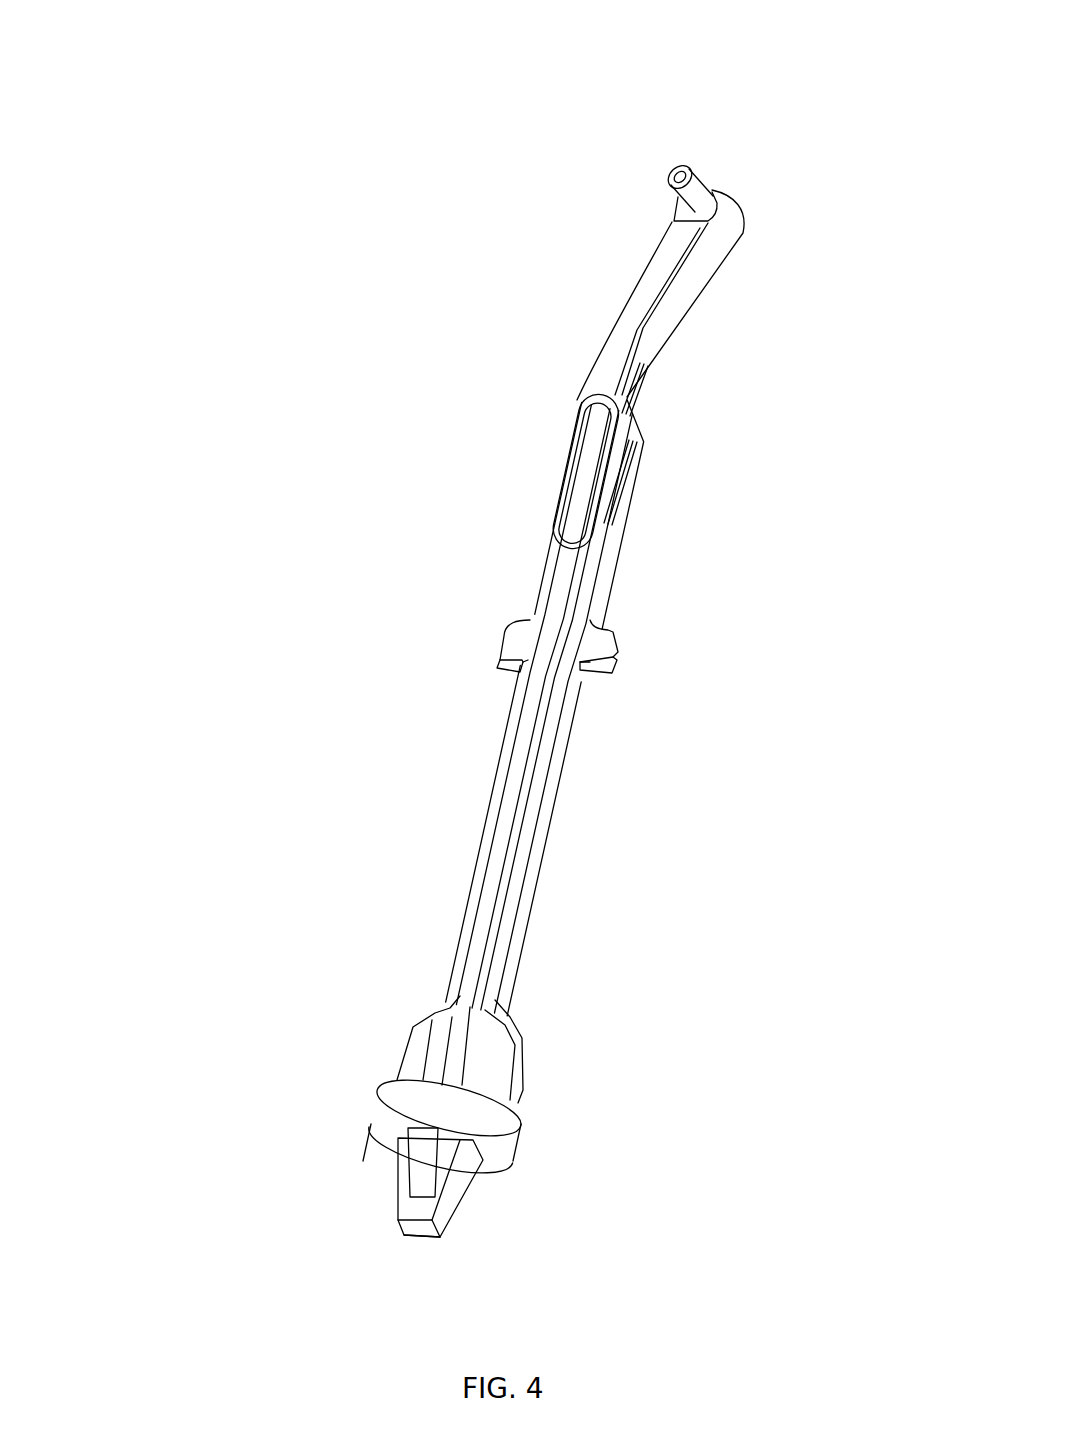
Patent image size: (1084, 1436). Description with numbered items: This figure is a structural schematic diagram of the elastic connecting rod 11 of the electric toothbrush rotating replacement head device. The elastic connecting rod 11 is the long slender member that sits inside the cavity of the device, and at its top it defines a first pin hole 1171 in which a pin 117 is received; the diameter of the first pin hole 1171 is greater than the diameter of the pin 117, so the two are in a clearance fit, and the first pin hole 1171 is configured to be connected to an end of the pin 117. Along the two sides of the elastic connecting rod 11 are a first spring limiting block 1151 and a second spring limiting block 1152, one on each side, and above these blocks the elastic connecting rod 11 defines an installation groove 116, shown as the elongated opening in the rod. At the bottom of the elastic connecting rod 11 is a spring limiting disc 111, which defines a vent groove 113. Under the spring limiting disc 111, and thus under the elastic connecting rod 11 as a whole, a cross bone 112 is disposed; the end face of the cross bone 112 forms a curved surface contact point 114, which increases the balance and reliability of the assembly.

The elastic connecting rod 11 is at (553, 822).
The spring limiting disc 111 is at (378, 1100).
The cross bone 112 is at (398, 1180).
The vent groove 113 is at (502, 1140).
The curved surface contact point 114 is at (442, 1238).
The first spring limiting block 1151 is at (512, 648).
The second spring limiting block 1152 is at (608, 652).
The installation groove 116 is at (597, 470).
The pin 117 is at (670, 178).
The first pin hole 1171 is at (706, 220).